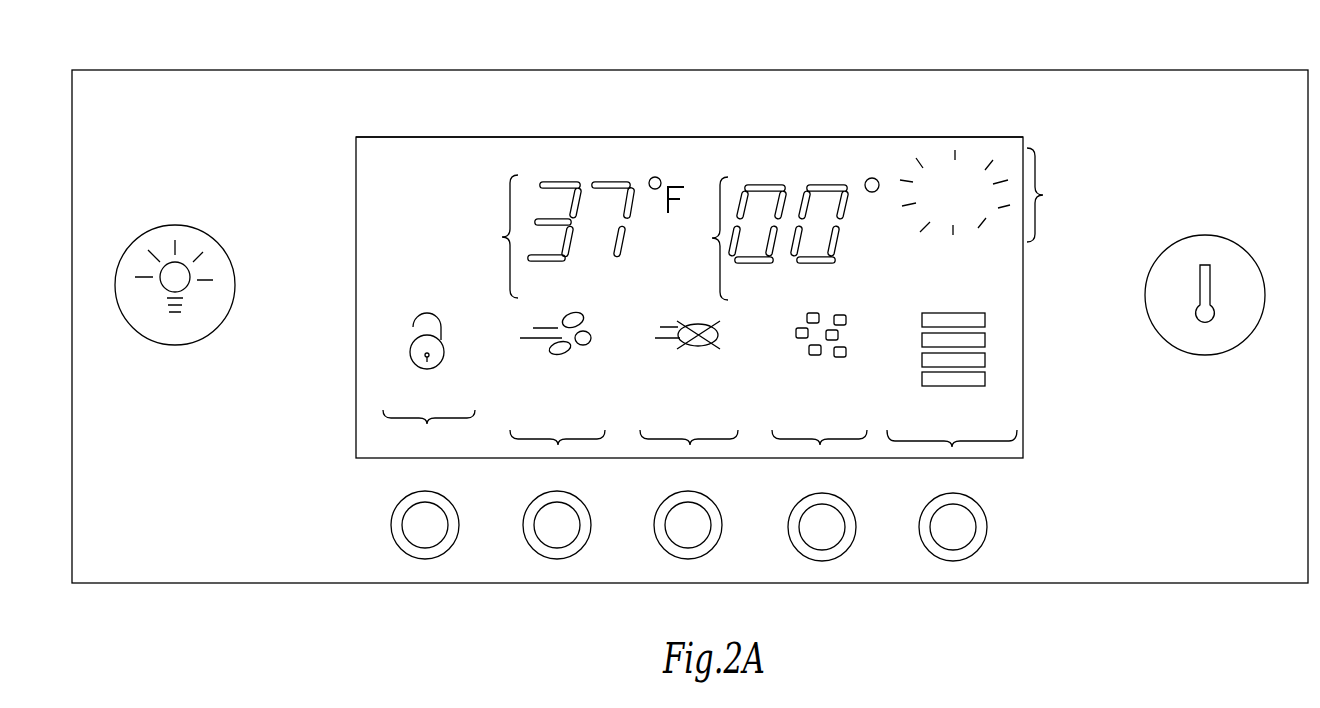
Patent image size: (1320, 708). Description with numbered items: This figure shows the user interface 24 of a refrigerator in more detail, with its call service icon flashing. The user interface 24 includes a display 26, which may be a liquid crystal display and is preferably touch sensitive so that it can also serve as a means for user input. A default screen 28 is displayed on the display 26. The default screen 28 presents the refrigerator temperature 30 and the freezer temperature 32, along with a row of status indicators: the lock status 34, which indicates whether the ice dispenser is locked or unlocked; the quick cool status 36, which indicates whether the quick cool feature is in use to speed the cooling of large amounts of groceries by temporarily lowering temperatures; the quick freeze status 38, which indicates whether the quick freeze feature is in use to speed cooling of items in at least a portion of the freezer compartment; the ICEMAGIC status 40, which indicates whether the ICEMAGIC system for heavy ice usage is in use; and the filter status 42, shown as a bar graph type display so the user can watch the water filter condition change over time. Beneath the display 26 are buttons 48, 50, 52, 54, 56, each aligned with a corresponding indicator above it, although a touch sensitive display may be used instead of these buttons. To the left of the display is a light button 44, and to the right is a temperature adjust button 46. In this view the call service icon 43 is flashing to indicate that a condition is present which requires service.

The user interface 24 is at (690, 72).
The display 26 is at (355, 196).
The default screen 28 is at (400, 148).
The refrigerator temperature 30 is at (500, 237).
The freezer temperature 32 is at (710, 238).
The lock status 34 is at (429, 383).
The quick cool status 36 is at (558, 445).
The quick freeze status 38 is at (690, 445).
The ICEMAGIC status 40 is at (820, 445).
The filter status 42 is at (952, 447).
The call service icon 43 is at (1045, 194).
The light button 44 is at (172, 226).
The temperature adjust button 46 is at (1207, 236).
The button 48 is at (410, 496).
The button 50 is at (542, 496).
The button 52 is at (673, 496).
The button 54 is at (807, 498).
The button 56 is at (938, 498).